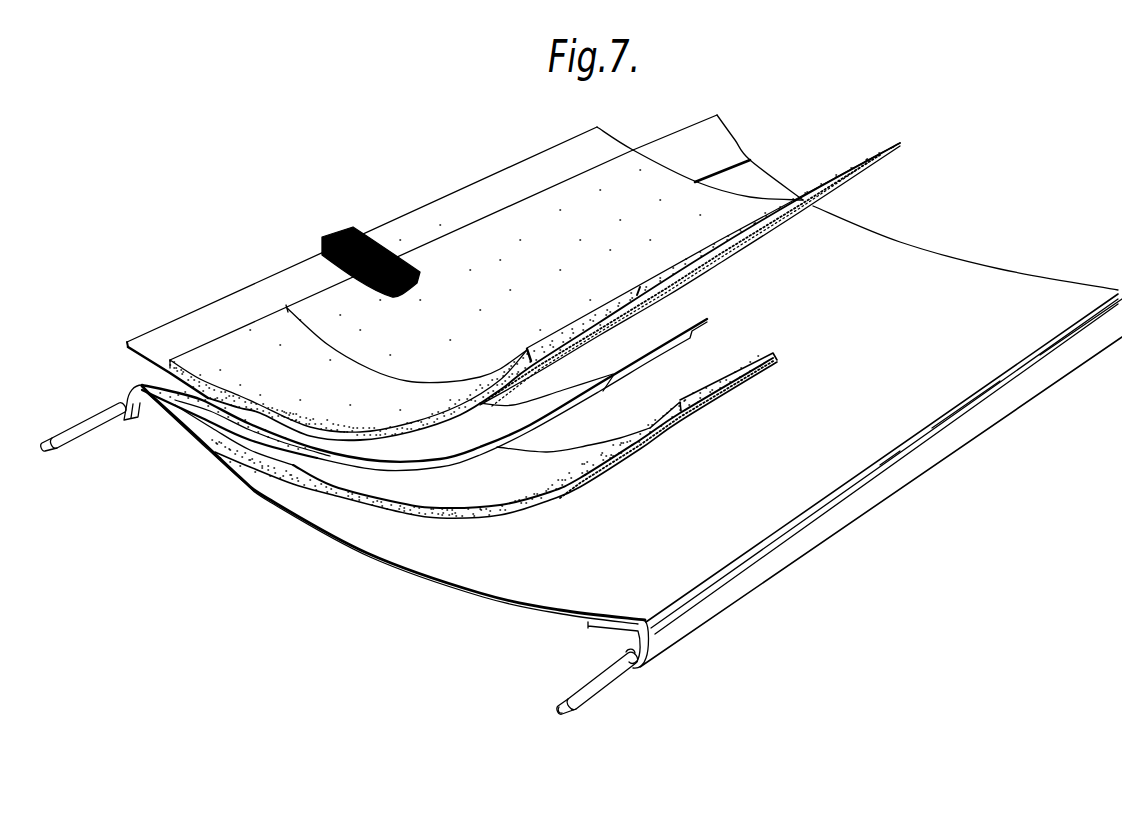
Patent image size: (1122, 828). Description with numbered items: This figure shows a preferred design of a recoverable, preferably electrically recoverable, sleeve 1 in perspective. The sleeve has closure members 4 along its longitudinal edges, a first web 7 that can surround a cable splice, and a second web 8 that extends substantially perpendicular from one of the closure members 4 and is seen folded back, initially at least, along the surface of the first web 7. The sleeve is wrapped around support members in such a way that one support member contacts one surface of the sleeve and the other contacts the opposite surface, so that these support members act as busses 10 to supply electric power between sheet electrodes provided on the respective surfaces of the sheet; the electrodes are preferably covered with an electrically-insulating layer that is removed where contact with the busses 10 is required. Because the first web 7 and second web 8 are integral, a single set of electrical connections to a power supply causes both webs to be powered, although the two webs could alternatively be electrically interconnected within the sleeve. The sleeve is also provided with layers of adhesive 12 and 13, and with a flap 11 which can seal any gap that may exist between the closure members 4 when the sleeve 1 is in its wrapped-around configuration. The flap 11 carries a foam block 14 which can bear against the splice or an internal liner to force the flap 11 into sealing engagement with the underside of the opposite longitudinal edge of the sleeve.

The sleeve 1 is at (739, 609).
The closure members 4 is at (128, 392).
The first web 7 is at (490, 578).
The second web 8 is at (357, 450).
The busses 10 is at (88, 433).
The flap 11 is at (250, 298).
The adhesive layer 12 is at (393, 513).
The adhesive layer 13 is at (282, 418).
The foam block 14 is at (371, 240).